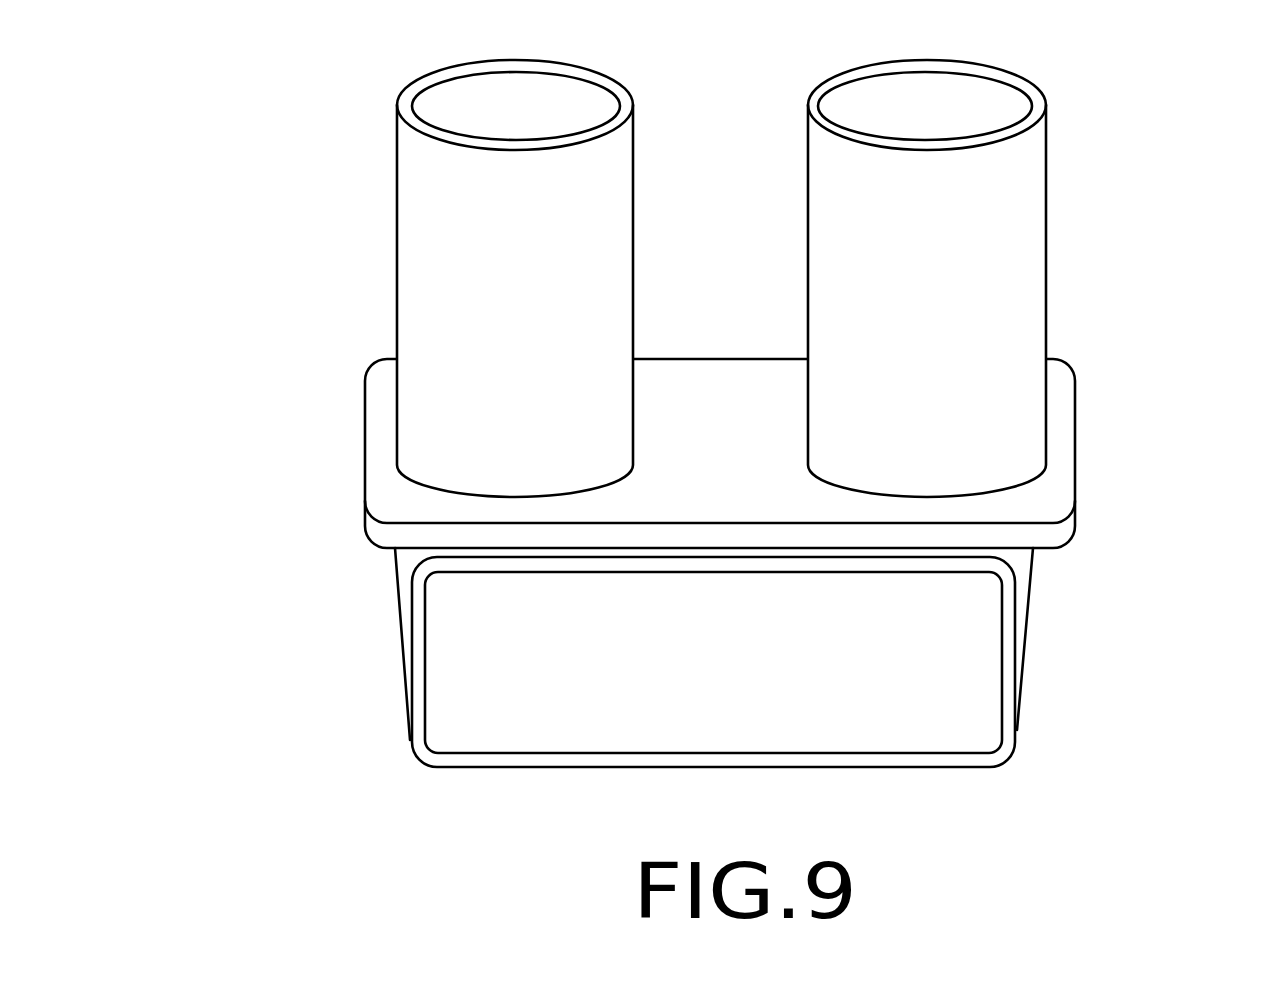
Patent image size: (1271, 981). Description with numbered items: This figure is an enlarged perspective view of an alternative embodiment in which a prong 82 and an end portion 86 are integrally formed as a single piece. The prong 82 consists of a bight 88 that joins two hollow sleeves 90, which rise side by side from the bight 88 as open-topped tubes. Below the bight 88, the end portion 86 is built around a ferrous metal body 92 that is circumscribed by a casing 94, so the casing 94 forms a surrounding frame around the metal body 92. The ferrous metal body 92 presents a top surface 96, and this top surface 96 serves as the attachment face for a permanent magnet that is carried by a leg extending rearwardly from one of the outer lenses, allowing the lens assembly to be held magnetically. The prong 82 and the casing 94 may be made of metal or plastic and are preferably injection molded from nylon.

The prong 82 is at (365, 445).
The end portion 86 is at (403, 657).
The bight 88 is at (1055, 498).
The hollow sleeves 90 is at (1008, 234).
The ferrous metal body 92 is at (1003, 624).
The casing 94 is at (1008, 737).
The top surface 96 is at (908, 718).